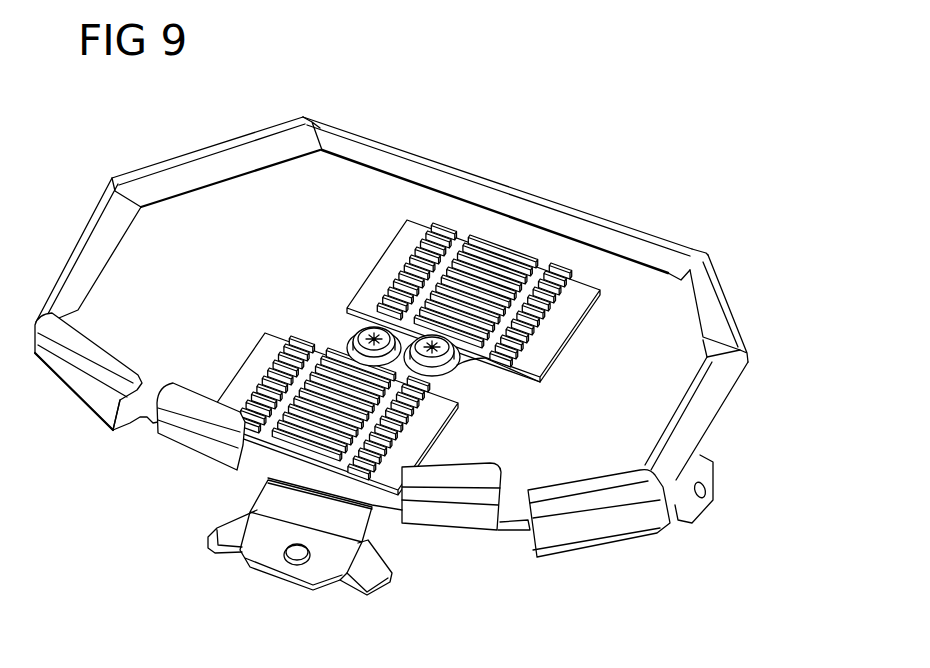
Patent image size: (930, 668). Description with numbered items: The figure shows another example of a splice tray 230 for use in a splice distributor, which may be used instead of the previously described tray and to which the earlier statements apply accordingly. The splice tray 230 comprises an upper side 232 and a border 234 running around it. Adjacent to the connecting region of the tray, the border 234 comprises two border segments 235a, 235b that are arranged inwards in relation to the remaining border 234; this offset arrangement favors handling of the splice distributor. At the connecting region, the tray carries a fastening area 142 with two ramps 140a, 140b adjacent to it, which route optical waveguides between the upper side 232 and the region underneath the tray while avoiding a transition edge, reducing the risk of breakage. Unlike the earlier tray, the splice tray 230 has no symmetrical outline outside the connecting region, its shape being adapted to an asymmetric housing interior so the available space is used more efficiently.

The upper side 232 is at (433, 382).
The splice tray 230 is at (390, 333).
The border 234 is at (475, 187).
The border segment 235a is at (188, 435).
The border segment 235b is at (435, 510).
The ramp 140a is at (225, 553).
The ramp 140b is at (354, 592).
The fastening area 142 is at (277, 578).